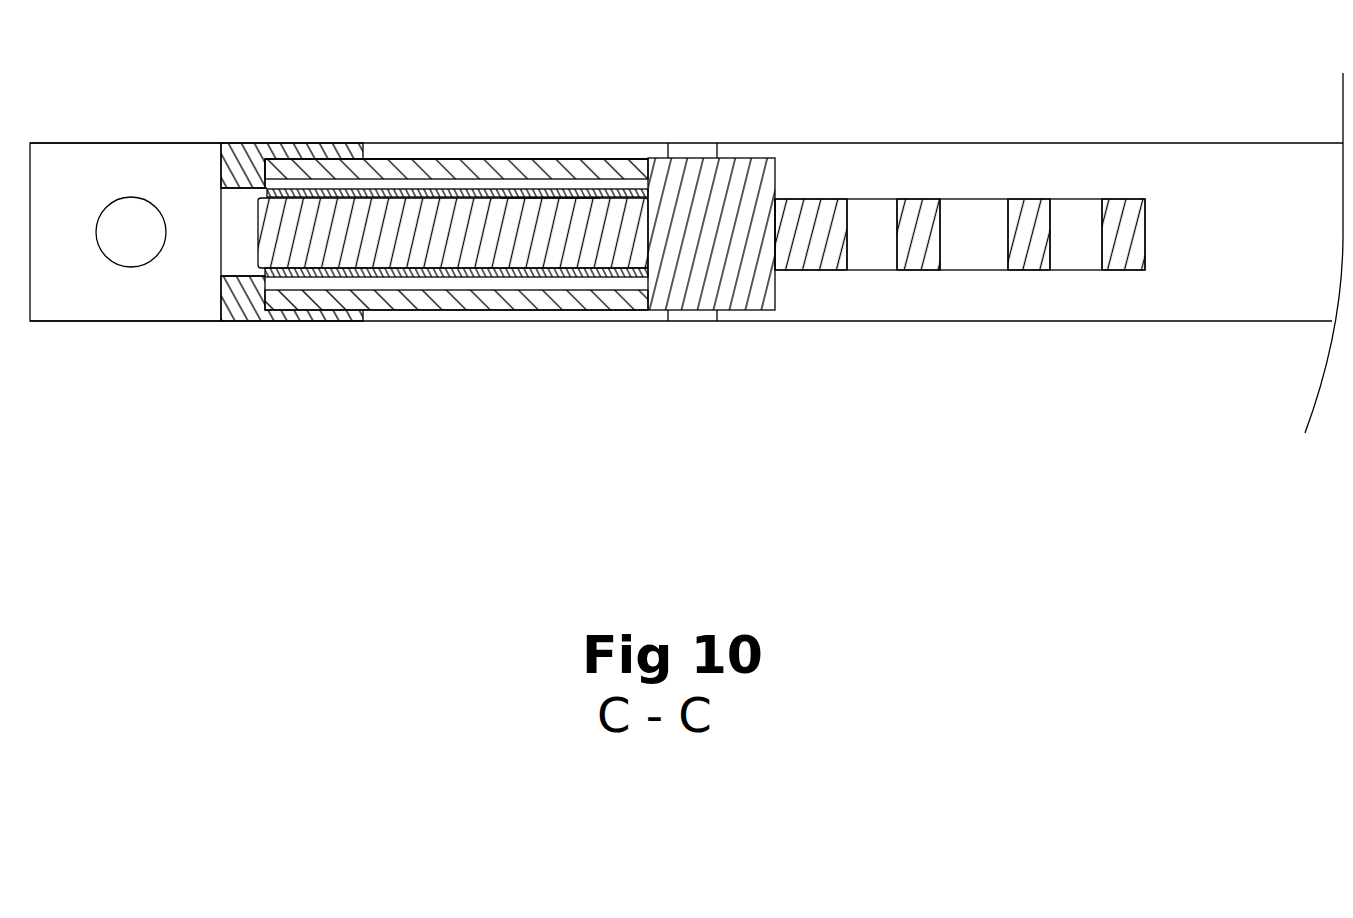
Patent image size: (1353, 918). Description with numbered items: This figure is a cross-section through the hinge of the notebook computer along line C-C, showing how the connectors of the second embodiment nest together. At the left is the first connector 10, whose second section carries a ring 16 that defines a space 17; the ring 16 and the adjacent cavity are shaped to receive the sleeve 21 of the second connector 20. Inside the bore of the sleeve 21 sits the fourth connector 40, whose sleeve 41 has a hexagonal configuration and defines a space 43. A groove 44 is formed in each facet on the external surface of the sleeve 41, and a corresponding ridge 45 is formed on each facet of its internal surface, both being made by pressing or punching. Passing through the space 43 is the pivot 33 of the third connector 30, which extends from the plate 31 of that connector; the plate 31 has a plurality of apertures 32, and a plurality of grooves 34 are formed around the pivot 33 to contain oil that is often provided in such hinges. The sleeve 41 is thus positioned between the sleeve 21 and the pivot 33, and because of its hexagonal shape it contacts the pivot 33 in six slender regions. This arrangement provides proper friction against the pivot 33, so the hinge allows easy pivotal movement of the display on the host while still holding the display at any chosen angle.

The first connector 10 is at (123, 365).
The ring 16 is at (242, 310).
The space 17 is at (240, 238).
The second connector 20 is at (534, 350).
The sleeve 21 is at (453, 307).
The third connector 30 is at (764, 348).
The plate 31 is at (813, 210).
The apertures 32 is at (888, 207).
The pivot 33 is at (552, 208).
The grooves 34 is at (401, 296).
The fourth connector 40 is at (490, 158).
The sleeve 41 is at (442, 215).
The space 43 is at (272, 187).
The groove 44 is at (336, 185).
The ridge 45 is at (395, 196).